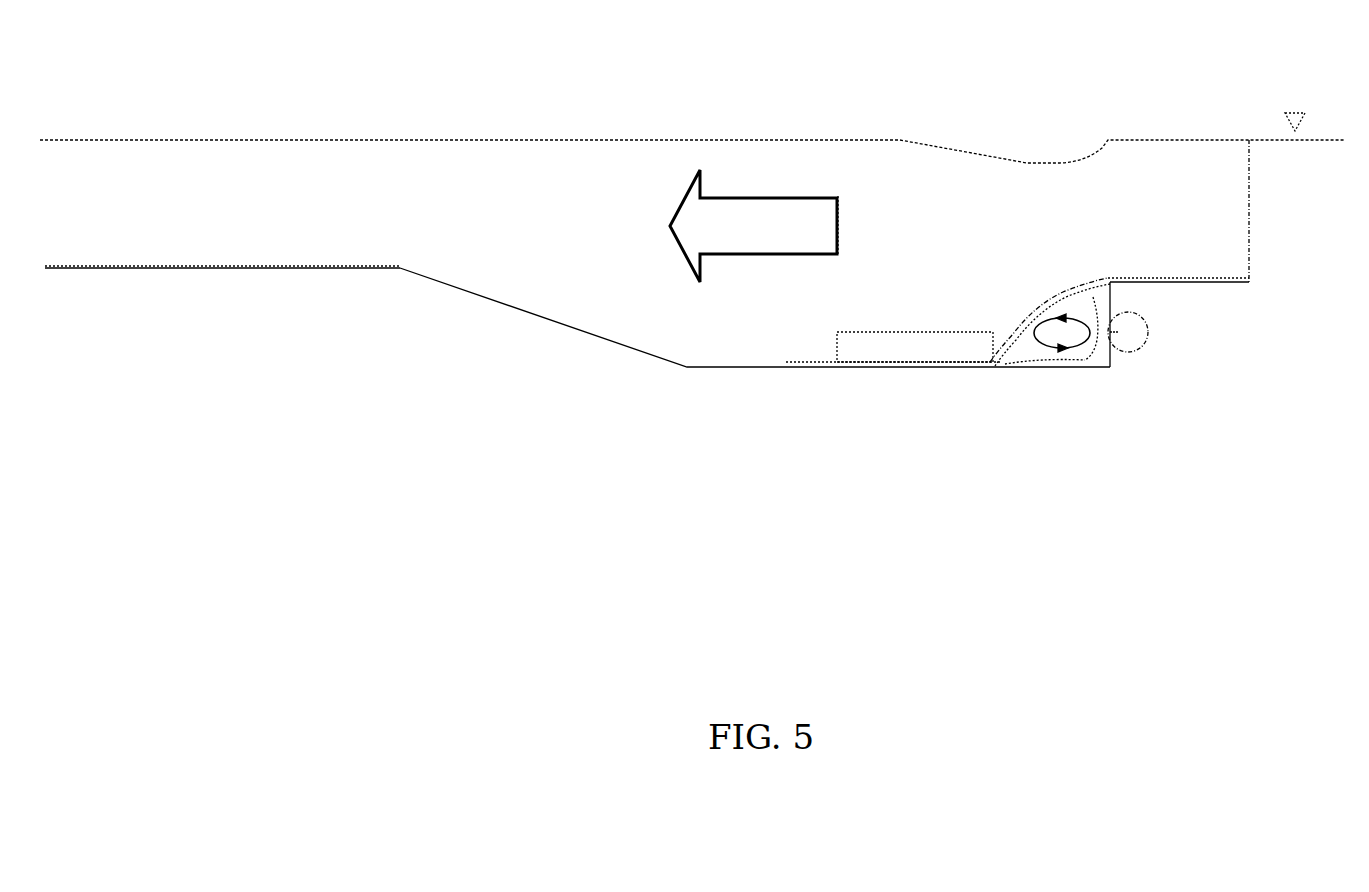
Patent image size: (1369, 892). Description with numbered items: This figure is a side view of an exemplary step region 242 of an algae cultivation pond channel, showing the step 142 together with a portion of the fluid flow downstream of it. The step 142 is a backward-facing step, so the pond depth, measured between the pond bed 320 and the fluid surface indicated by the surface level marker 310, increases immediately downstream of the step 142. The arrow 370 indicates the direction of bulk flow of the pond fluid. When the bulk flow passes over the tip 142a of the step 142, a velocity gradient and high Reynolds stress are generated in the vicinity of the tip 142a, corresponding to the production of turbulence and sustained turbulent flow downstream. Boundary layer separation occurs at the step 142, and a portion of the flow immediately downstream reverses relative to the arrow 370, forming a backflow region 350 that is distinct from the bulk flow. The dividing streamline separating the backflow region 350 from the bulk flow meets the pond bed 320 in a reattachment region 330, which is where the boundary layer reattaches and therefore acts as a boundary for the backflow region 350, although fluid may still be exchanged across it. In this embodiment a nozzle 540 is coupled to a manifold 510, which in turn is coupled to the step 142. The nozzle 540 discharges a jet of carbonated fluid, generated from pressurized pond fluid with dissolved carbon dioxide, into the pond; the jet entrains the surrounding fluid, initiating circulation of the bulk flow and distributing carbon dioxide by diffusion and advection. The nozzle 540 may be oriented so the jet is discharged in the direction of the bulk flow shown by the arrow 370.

The surface level marker 310 is at (1293, 110).
The step region 242 is at (236, 358).
The pond bed 320 is at (700, 366).
The reattachment region 330 is at (893, 332).
The arrow 370 is at (735, 257).
The backflow region 350 is at (1042, 360).
The nozzle 540 is at (1050, 322).
The step 142 is at (1115, 365).
The tip 142a is at (1120, 292).
The manifold 510 is at (1150, 338).